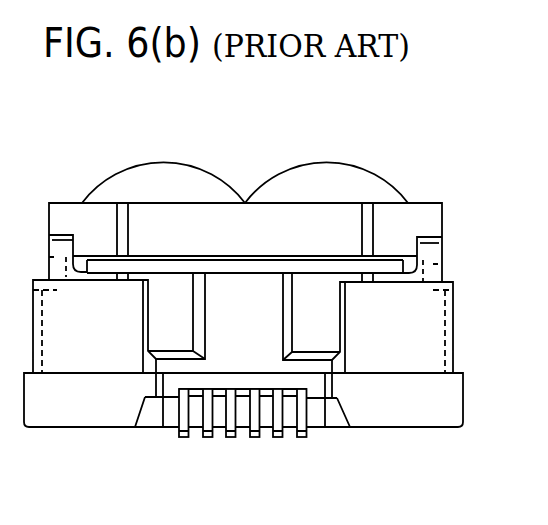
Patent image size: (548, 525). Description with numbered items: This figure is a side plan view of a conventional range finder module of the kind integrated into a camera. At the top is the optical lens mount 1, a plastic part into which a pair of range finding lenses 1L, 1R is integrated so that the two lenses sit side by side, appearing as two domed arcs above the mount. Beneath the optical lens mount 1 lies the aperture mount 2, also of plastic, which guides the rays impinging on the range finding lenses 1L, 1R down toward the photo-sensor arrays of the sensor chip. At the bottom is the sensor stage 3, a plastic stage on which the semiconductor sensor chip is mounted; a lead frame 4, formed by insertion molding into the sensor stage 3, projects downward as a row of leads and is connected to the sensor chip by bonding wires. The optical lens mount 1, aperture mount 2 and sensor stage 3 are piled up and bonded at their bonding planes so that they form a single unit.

The optical lens mount 1 is at (59, 213).
The range finding lens 1L is at (155, 178).
The range finding lens 1R is at (333, 181).
The aperture mount 2 is at (433, 313).
The sensor stage 3 is at (435, 404).
The lead frame 4 is at (302, 428).